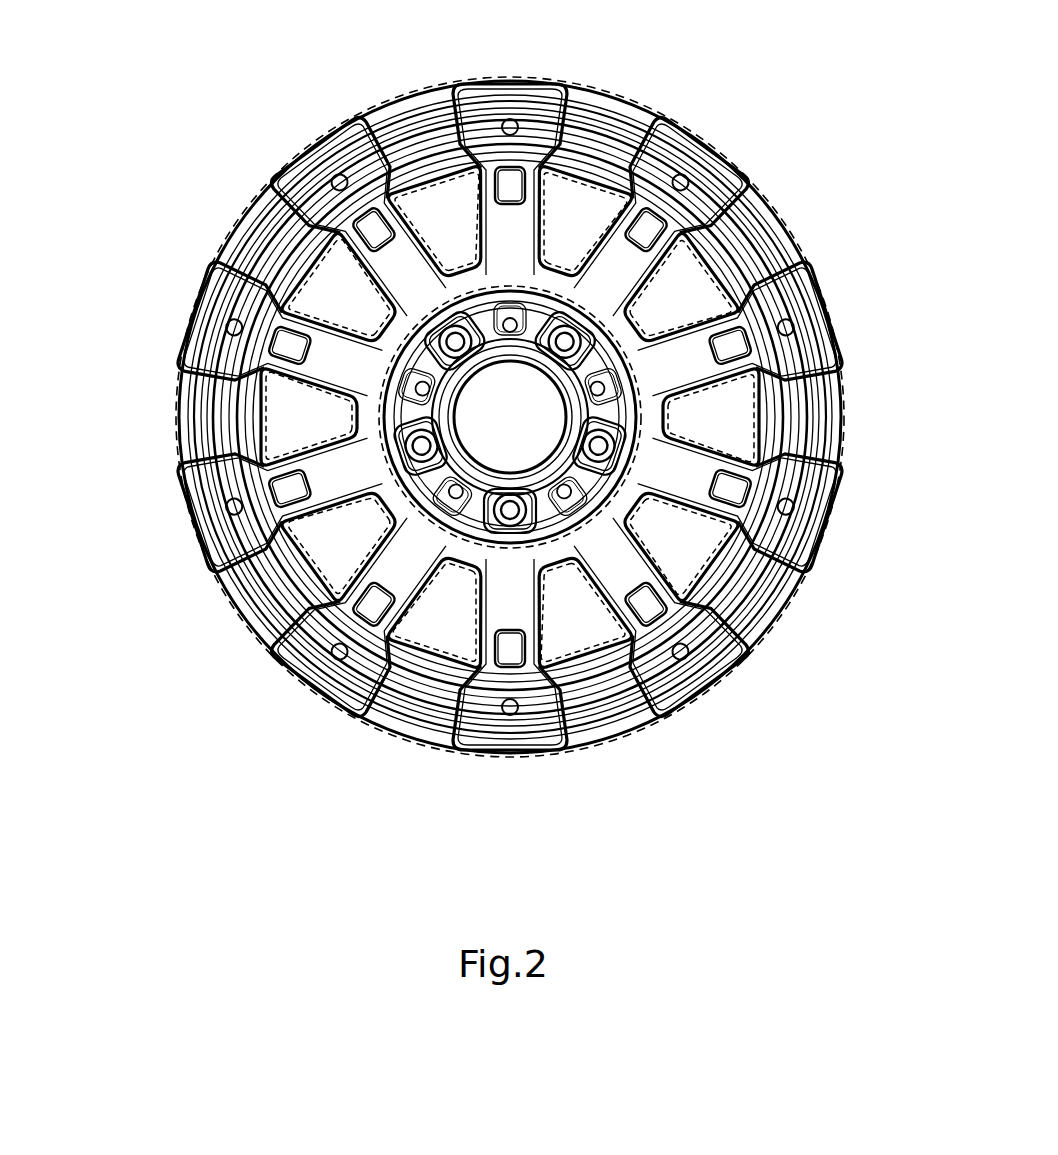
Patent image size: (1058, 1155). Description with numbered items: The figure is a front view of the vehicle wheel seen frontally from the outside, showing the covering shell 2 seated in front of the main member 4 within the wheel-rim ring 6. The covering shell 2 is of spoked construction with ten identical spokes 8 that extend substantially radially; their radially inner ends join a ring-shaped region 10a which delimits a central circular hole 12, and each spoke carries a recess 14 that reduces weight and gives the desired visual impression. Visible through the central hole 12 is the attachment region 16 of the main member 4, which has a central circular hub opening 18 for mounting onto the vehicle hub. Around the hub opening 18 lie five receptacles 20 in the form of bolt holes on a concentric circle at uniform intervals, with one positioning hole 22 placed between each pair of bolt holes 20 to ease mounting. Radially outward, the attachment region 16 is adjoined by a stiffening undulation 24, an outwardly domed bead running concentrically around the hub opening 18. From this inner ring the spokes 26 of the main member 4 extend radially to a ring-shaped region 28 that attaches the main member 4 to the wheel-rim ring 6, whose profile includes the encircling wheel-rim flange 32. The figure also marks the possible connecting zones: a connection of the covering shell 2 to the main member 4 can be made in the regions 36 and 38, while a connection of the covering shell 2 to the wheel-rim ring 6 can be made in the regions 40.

The covering shell 2 is at (388, 246).
The main member 4 is at (237, 416).
The wheel-rim ring 6 is at (781, 206).
The spokes 8 is at (320, 482).
The ring-shaped region 10a is at (608, 491).
The central circular hole 12 is at (473, 408).
The recess 14 is at (668, 148).
The attachment region 16 is at (393, 346).
The hub opening 18 is at (473, 408).
The receptacles (bolt holes) 20 is at (592, 438).
The positioning hole 22 is at (450, 489).
The stiffening undulation 24 is at (555, 508).
The spokes 26 is at (288, 483).
The ring-shaped region 28 is at (438, 671).
The wheel-rim flange 32 is at (388, 101).
The region 36 is at (453, 277).
The region 38 is at (588, 186).
The regions 40 is at (708, 141).